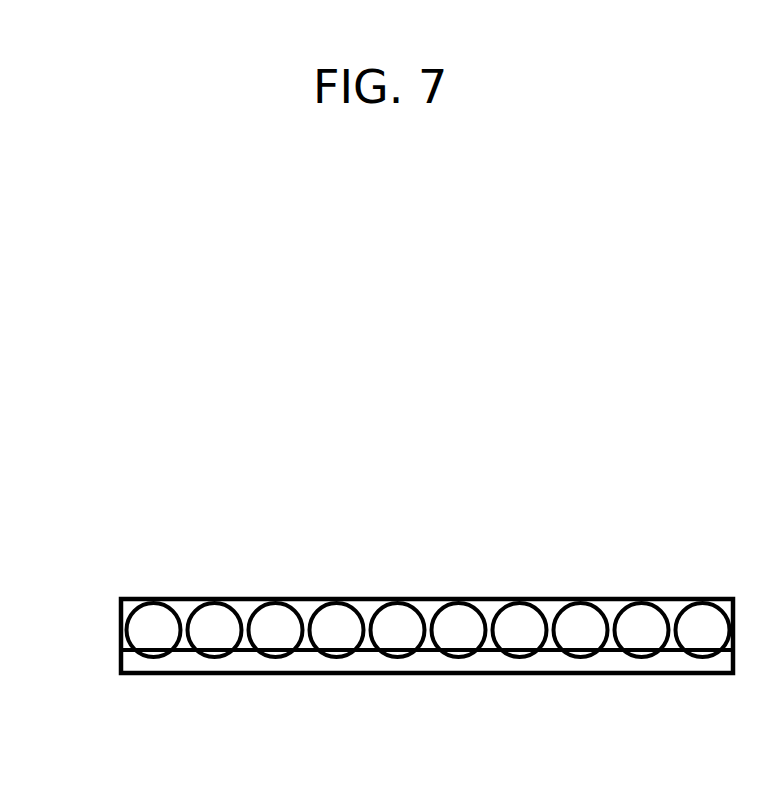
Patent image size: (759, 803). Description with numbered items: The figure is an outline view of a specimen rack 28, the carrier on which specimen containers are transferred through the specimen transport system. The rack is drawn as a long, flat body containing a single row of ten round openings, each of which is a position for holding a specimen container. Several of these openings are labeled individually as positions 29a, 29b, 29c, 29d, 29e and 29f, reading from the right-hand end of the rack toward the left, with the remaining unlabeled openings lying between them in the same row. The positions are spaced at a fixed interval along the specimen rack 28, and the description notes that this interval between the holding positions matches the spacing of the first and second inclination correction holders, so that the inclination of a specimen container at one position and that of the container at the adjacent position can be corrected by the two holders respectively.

The specimen rack 28 is at (119, 640).
The position 29a is at (682, 605).
The position 29b is at (617, 606).
The position 29c is at (558, 606).
The position 29d is at (251, 603).
The position 29e is at (193, 603).
The position 29f is at (131, 603).